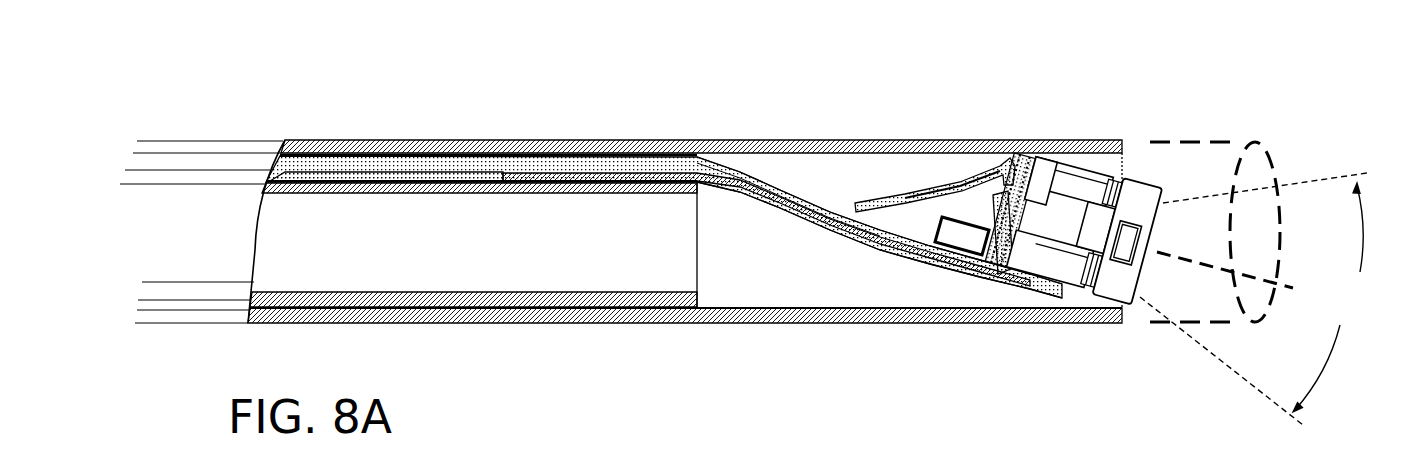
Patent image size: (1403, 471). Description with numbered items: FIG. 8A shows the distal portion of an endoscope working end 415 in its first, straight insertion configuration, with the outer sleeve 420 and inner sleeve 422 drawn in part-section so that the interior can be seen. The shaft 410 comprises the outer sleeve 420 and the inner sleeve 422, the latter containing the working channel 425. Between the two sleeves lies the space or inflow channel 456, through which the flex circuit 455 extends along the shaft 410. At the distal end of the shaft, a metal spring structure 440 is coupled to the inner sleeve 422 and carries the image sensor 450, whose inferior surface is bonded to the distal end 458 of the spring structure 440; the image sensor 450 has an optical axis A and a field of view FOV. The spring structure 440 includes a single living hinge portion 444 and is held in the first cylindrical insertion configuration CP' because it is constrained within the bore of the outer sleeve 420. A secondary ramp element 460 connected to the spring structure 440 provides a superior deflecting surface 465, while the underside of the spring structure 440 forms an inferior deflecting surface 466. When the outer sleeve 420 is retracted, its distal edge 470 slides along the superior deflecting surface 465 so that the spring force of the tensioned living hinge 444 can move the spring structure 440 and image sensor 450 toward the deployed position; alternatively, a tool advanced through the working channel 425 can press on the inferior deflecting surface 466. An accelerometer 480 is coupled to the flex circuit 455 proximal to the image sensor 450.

The shaft 410 is at (388, 118).
The endoscope working end 415 is at (931, 75).
The outer sleeve 420 is at (668, 148).
The inner sleeve 422 is at (612, 300).
The working channel 425 is at (687, 270).
The spring structure 440 is at (907, 255).
The living hinge portion 444 is at (782, 197).
The image sensor 450 is at (1057, 173).
The flex circuit 455 is at (831, 208).
The inflow channel 456 is at (475, 172).
The distal end 458 is at (1040, 287).
The secondary ramp element 460 is at (979, 172).
The superior deflecting surface 465 is at (937, 193).
The inferior deflecting surface 466 is at (808, 210).
The distal edge 470 is at (1114, 172).
The accelerometer 480 is at (963, 240).
The first cylindrical insertion configuration CP' is at (1215, 191).
The optical axis A is at (1203, 263).
The field of view FOV is at (1253, 299).